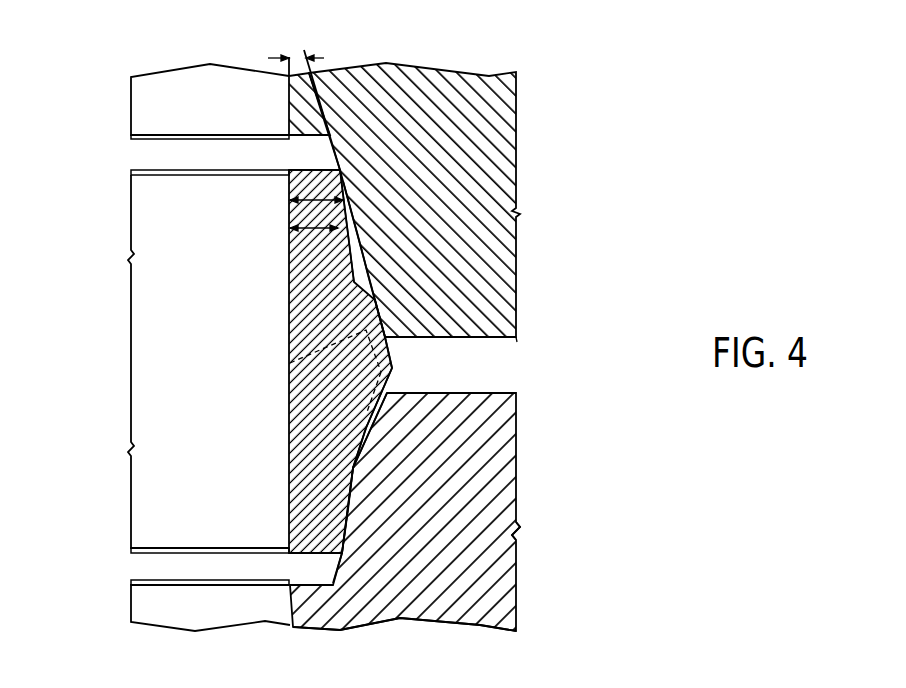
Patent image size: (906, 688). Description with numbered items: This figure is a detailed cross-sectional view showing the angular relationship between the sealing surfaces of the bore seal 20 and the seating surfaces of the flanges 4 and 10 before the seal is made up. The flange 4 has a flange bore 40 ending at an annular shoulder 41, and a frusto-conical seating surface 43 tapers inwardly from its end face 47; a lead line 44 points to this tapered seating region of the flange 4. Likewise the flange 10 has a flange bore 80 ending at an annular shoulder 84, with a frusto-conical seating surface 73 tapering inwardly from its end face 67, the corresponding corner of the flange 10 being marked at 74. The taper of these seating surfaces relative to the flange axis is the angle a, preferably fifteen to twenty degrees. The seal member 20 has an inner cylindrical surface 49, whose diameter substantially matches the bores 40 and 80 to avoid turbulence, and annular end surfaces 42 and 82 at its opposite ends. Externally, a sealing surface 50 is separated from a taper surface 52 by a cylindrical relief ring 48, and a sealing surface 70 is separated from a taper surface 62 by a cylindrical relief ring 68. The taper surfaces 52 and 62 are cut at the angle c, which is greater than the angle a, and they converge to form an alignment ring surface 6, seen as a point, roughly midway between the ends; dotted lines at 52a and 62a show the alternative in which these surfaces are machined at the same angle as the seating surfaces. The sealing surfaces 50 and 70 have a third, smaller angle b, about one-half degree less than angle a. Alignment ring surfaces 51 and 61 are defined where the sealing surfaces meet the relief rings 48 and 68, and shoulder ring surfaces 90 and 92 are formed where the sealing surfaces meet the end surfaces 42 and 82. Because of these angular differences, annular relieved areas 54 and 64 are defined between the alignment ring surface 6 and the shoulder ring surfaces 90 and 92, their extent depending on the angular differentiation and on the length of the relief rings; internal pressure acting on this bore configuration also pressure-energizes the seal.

The flange 4 is at (433, 200).
The alignment ring surface 6 is at (392, 368).
The flange 10 is at (442, 628).
The bore seal 20 is at (208, 361).
The flange bore 40 is at (230, 99).
The annular shoulder 41 is at (170, 143).
The annular end surface 42 is at (178, 169).
The frusto-conical seating surface 43 is at (294, 155).
The conical bore surface 44 is at (397, 104).
The end face 47 is at (576, 341).
The cylindrical relief ring 48 is at (477, 257).
The inner cylindrical surface 49 is at (297, 361).
The sealing surface 50 is at (454, 204).
The alignment ring surface 51 is at (469, 229).
The taper surface 52 is at (478, 314).
The taper surface configuration 52a is at (290, 363).
The annular relieved area 54 is at (427, 303).
The alignment ring surface 61 is at (459, 521).
The taper surface 62 is at (434, 512).
The taper surface configuration 62a is at (367, 411).
The annular relieved area 64 is at (401, 449).
The end face 67 is at (494, 386).
The cylindrical relief ring 68 is at (458, 485).
The sealing surface 70 is at (390, 466).
The frusto-conical seating surface 73 is at (302, 572).
The corner 74 is at (372, 628).
The flange bore 80 is at (210, 628).
The annular end surface 82 is at (160, 561).
The annular shoulder 84 is at (180, 583).
The shoulder ring surface 90 is at (342, 172).
The shoulder ring surface 92 is at (462, 549).
The taper angle a is at (277, 38).
The taper angle b is at (297, 194).
The taper angle c is at (291, 241).